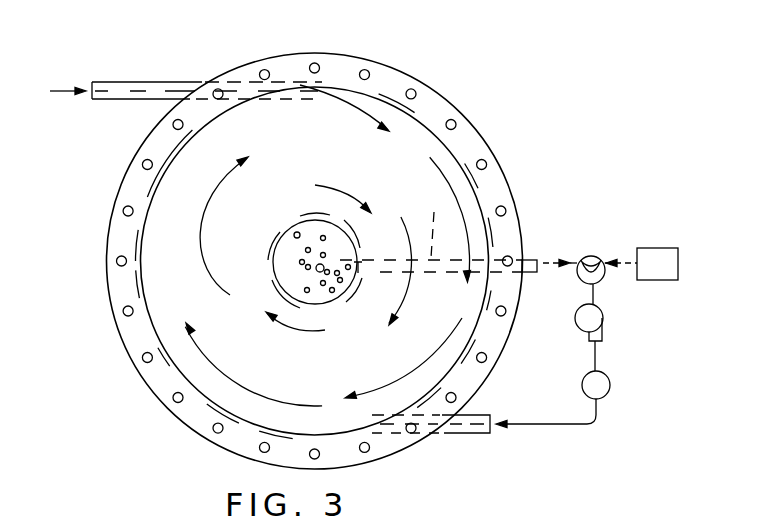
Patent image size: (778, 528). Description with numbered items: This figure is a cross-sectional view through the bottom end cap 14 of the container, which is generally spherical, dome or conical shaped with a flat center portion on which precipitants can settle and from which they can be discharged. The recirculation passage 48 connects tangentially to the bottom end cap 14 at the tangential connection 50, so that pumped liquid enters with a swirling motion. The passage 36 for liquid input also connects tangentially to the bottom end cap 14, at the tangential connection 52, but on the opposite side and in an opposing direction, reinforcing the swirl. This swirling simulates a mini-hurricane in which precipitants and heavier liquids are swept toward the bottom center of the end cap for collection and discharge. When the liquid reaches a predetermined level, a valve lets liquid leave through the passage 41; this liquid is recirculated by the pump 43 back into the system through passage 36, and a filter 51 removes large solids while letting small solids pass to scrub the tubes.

The bottom end cap 14 is at (490, 126).
The passage for liquid input 36 is at (488, 434).
The passage 41 is at (426, 223).
The pump 43 is at (603, 327).
The recirculation passage 48 is at (110, 101).
The tangential connection of the recirculation passage 50 is at (173, 82).
The filter 51 is at (609, 389).
The tangential connection of the liquid input passage 52 is at (432, 435).